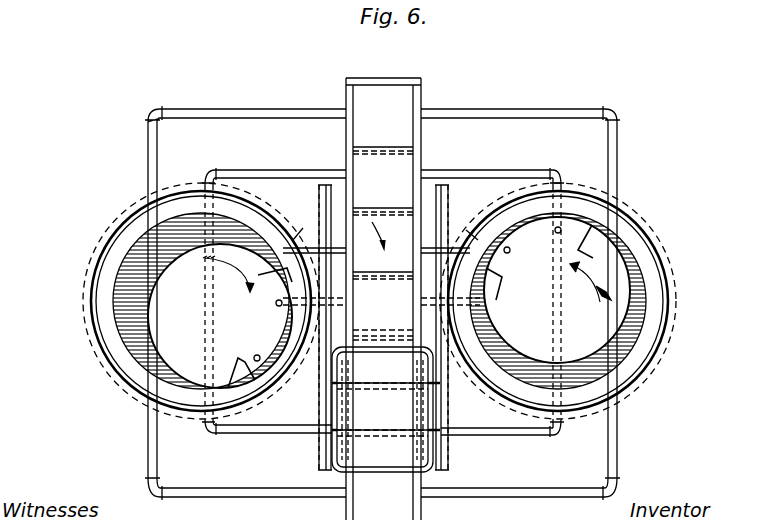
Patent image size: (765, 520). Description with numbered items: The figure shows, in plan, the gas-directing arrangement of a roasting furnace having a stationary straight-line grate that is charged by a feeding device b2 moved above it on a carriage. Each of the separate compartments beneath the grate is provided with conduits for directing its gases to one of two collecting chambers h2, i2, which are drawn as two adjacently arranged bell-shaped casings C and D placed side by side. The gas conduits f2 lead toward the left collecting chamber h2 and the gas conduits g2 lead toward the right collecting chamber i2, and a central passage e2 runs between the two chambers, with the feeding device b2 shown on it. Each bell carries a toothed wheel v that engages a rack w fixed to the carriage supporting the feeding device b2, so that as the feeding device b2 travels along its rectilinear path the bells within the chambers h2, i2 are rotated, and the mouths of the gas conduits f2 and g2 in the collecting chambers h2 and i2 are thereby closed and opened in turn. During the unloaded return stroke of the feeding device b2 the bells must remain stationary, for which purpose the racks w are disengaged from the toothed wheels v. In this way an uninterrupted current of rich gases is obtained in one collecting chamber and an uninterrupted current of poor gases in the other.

The left rotary engine casing C is at (86, 305).
The right rotary engine casing D is at (680, 310).
The collecting chamber h2 is at (220, 316).
The collecting chamber i2 is at (557, 290).
The central steam chest / column e2 is at (383, 299).
The gas conduit f2 is at (270, 162).
The gas conduit g2 is at (458, 112).
The feeding device b2 is at (360, 392).
The toothed wheel v is at (385, 225).
The rack w is at (328, 284).